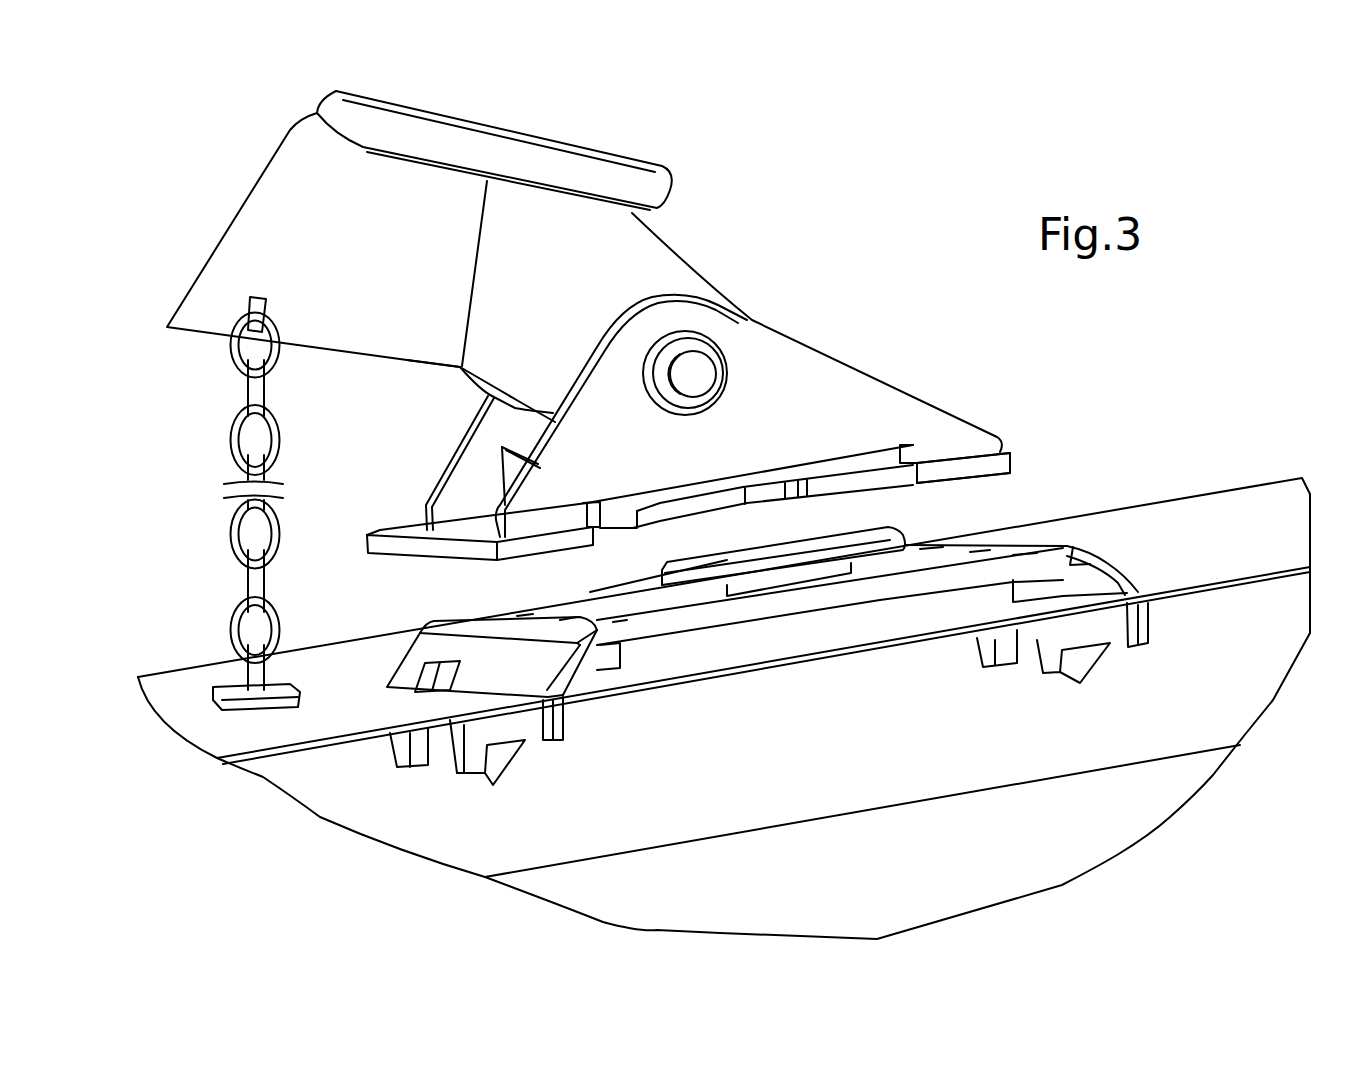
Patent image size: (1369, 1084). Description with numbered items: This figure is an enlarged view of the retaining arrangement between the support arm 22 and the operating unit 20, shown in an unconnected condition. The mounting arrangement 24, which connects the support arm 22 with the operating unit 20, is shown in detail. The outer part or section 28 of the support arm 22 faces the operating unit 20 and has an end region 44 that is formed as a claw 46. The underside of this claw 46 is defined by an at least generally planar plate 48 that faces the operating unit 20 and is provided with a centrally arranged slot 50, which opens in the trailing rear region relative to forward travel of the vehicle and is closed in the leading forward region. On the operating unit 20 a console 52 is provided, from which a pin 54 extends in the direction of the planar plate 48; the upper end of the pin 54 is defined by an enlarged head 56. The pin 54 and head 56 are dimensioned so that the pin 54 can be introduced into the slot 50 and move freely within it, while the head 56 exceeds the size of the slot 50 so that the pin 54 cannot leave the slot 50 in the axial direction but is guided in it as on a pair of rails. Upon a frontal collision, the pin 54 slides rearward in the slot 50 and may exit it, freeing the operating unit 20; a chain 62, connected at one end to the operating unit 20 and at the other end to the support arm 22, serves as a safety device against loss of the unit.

The operating unit 20 is at (1211, 462).
The support arm 22 is at (250, 178).
The mounting arrangement 24 is at (728, 237).
The outer part or section of the support arm 28 is at (403, 368).
The end region 44 is at (857, 343).
The claw 46 is at (468, 585).
The planar plate 48 is at (1000, 478).
The slot 50 is at (683, 526).
The console 52 is at (850, 597).
The pin 54 is at (745, 588).
The head 56 is at (798, 543).
The chain 62 is at (225, 450).